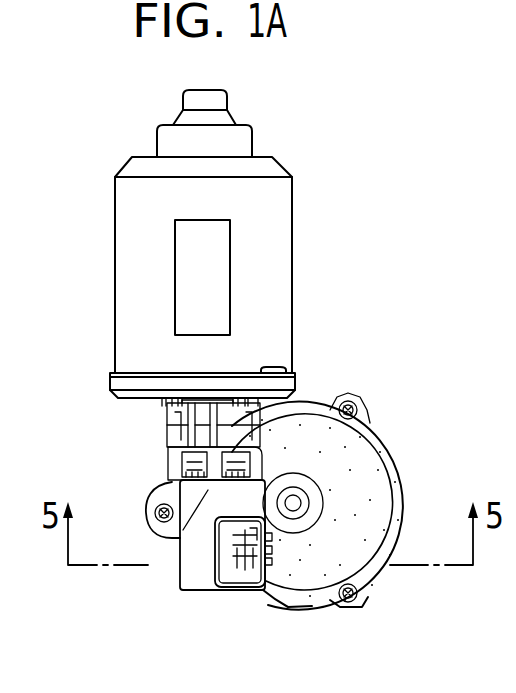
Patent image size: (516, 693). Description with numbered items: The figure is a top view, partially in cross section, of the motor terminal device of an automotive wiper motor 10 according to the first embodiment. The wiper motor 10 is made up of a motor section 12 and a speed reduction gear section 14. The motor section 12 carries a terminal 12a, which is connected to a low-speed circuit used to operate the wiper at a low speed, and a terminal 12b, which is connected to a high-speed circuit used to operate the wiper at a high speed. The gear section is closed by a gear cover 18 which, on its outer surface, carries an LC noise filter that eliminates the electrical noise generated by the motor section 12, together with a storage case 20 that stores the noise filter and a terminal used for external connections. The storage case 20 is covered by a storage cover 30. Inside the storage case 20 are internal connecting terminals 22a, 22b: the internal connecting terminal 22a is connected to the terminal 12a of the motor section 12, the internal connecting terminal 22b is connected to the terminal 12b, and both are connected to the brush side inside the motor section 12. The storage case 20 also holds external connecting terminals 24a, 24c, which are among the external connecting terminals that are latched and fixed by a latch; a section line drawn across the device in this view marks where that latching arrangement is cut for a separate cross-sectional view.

The wiper motor 10 is at (278, 128).
The motor section 12 is at (291, 233).
The terminal 12a is at (186, 395).
The terminal 12b is at (222, 395).
The speed reduction gear section 14 is at (398, 470).
The gear cover 18 is at (347, 548).
The storage case 20 is at (167, 462).
The internal connecting terminal 22a is at (170, 436).
The internal connecting terminal 22b is at (300, 437).
The external connecting terminal 24a is at (228, 570).
The external connecting terminal 24c is at (272, 568).
The storage cover 30 is at (185, 558).